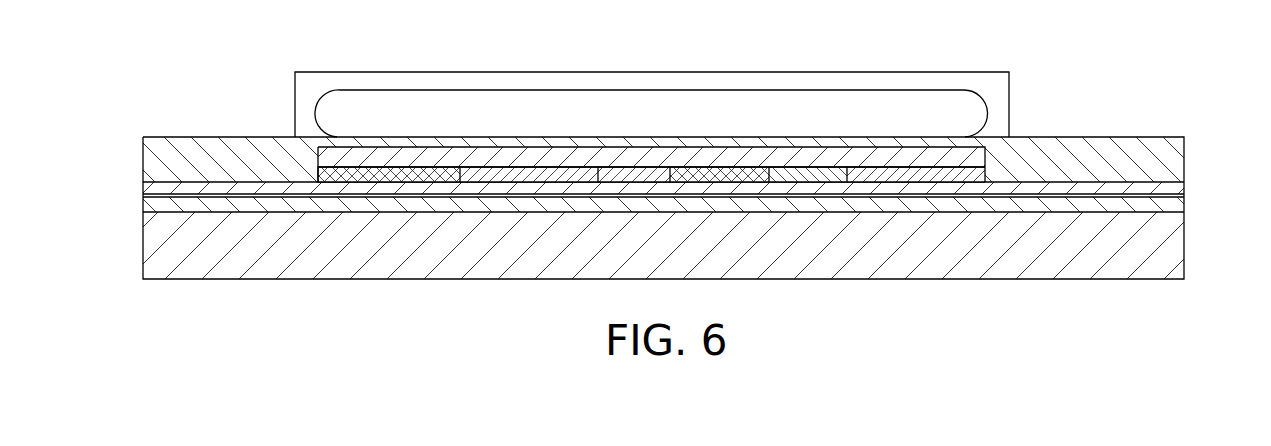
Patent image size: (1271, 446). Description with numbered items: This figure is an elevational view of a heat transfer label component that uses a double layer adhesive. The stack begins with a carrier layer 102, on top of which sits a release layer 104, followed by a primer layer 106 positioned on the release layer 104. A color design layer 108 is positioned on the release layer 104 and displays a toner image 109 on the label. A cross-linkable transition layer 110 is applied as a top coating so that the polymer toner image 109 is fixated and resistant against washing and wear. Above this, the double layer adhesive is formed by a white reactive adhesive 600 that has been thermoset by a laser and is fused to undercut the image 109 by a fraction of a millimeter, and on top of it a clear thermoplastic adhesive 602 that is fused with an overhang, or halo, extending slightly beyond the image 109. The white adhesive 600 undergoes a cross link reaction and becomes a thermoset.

The carrier layer 102 is at (162, 246).
The release layer 104 is at (150, 200).
The primer layer 106 is at (148, 187).
The color design layer 108 is at (347, 168).
The toner image 109 is at (528, 175).
The cross-linkable transition layer 110 is at (1163, 163).
The white reactive adhesive 600 is at (964, 114).
The clear thermoplastic adhesive 602 is at (862, 84).